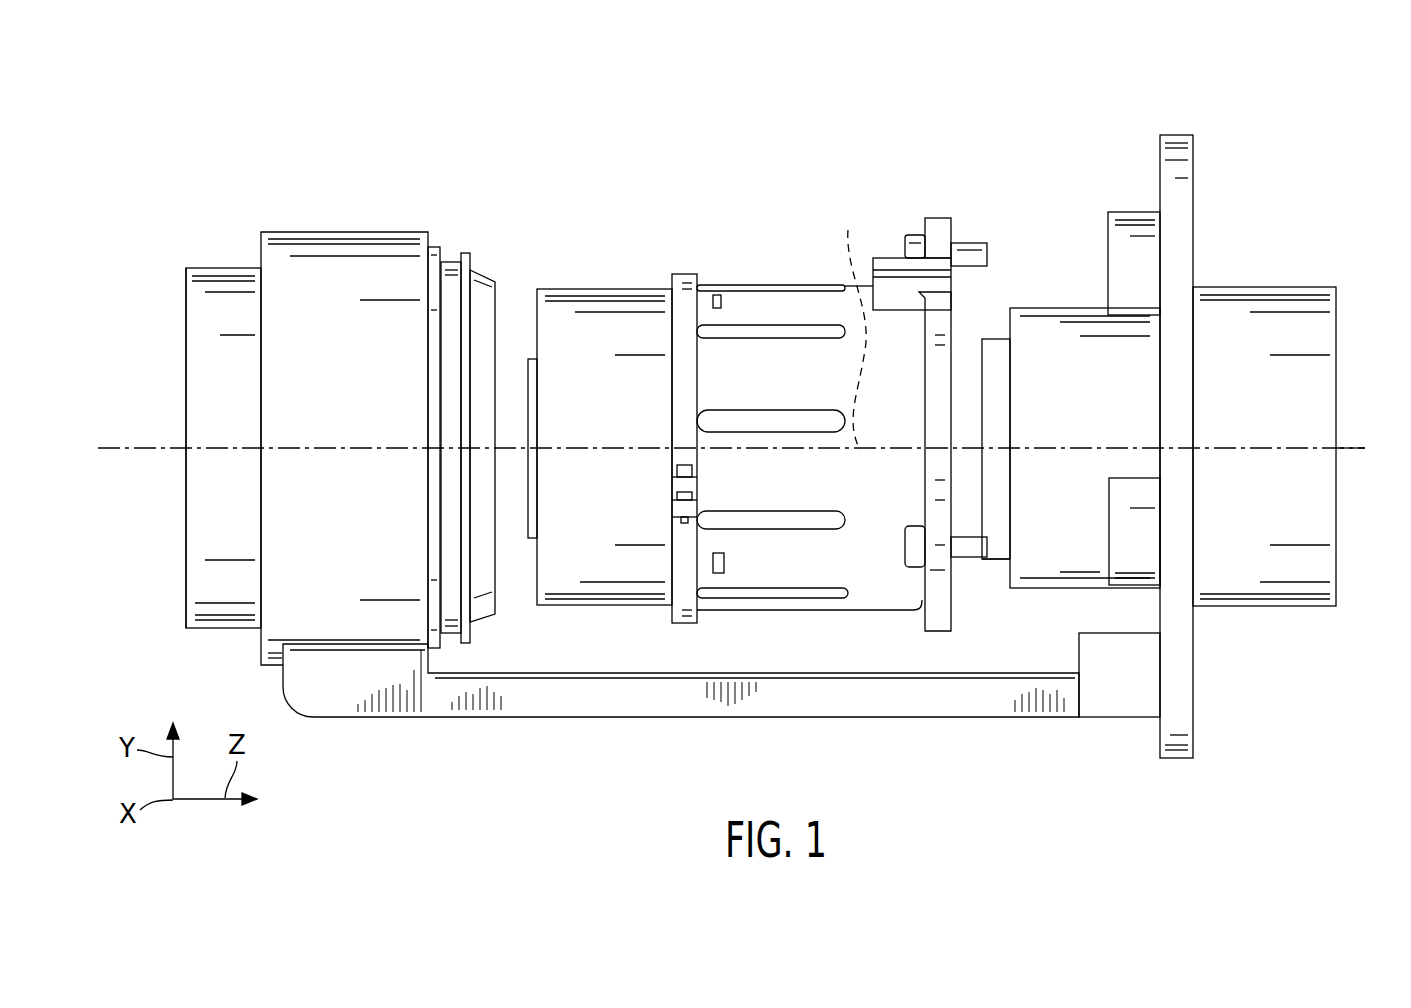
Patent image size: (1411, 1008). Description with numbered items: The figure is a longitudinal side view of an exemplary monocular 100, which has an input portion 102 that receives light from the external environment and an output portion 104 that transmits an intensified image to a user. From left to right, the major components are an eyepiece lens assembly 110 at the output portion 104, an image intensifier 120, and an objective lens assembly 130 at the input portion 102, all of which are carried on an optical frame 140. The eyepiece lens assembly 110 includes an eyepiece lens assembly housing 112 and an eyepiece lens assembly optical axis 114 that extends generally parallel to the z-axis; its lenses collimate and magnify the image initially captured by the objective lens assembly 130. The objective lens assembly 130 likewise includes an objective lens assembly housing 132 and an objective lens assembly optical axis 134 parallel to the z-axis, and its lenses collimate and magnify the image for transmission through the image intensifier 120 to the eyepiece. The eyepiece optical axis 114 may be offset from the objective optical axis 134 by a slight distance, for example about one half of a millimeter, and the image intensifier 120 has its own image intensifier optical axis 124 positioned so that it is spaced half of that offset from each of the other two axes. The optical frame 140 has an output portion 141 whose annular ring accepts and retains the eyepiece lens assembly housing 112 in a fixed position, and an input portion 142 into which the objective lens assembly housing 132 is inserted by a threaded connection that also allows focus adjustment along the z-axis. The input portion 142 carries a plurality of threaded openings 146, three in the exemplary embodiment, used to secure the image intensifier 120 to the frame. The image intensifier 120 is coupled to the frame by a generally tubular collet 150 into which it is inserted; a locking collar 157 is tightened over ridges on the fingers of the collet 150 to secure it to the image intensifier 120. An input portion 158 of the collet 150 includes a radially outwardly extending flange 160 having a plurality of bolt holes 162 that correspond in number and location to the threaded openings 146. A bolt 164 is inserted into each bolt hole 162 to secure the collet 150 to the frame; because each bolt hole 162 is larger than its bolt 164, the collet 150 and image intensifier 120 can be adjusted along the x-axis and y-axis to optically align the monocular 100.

The monocular 100 is at (1326, 158).
The input portion 102 is at (1336, 306).
The output portion 104 is at (186, 375).
The eyepiece lens assembly 110 is at (224, 268).
The eyepiece lens assembly housing 112 is at (452, 262).
The eyepiece lens assembly optical axis 114 is at (133, 450).
The image intensifier 120 is at (592, 289).
The image intensifier optical axis 124 is at (845, 322).
The objective lens assembly 130 is at (1000, 339).
The objective lens assembly housing 132 is at (997, 560).
The objective lens assembly optical axis 134 is at (1357, 447).
The optical frame 140 is at (1193, 706).
The output portion 141 is at (305, 232).
The input portion 142 is at (1193, 150).
The threaded openings 146 is at (1108, 224).
The collet 150 is at (770, 286).
The locking collar 157 is at (684, 274).
The input portion 158 is at (950, 222).
The flange 160 is at (924, 222).
The bolt holes 162 is at (953, 243).
The bolt 164 is at (912, 235).